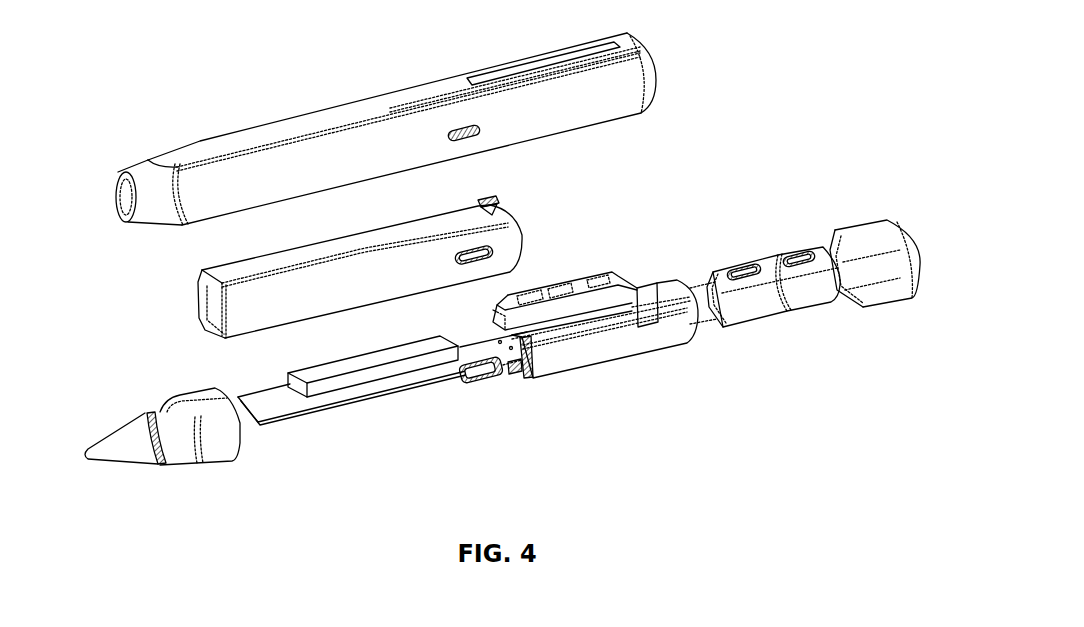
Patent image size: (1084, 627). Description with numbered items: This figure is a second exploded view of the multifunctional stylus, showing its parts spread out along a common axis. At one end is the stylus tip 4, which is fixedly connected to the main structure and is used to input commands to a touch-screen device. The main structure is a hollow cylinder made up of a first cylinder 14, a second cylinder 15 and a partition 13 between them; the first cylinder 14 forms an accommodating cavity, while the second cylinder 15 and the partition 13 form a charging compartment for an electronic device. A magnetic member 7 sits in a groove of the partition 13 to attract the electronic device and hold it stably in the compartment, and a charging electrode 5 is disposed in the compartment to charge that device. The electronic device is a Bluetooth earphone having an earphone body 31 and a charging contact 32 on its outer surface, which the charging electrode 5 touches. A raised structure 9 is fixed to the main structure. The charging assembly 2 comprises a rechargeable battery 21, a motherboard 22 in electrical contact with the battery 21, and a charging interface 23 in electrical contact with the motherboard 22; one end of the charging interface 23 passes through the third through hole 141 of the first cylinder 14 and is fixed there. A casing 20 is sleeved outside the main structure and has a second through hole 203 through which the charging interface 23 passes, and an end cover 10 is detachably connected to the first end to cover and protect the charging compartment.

The charging assembly 2 is at (382, 413).
The stylus tip 4 is at (142, 445).
The charging electrode 5 is at (648, 297).
The magnetic member 7 is at (530, 383).
The raised structure 9 is at (602, 303).
The end cover 10 is at (883, 248).
The partition 13 is at (515, 372).
The first cylinder 14 is at (508, 228).
The second cylinder 15 is at (587, 357).
The casing 20 is at (297, 125).
The rechargeable battery 21 is at (336, 384).
The motherboard 22 is at (270, 409).
The charging interface 23 is at (475, 394).
The earphone body 31 is at (750, 302).
The charging contact 32 is at (740, 267).
The third through hole 141 is at (462, 255).
The second through hole 203 is at (455, 126).